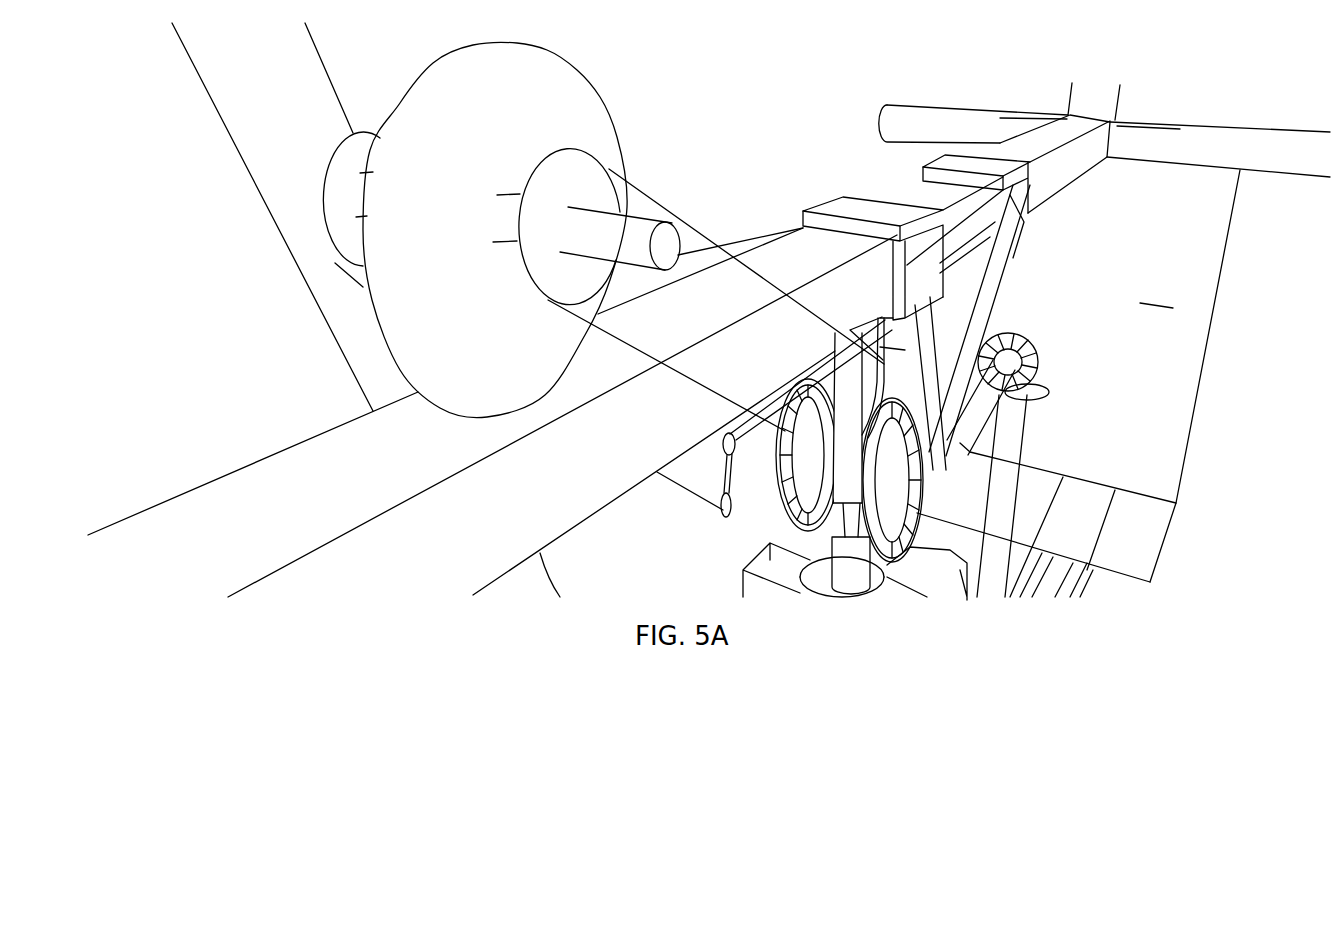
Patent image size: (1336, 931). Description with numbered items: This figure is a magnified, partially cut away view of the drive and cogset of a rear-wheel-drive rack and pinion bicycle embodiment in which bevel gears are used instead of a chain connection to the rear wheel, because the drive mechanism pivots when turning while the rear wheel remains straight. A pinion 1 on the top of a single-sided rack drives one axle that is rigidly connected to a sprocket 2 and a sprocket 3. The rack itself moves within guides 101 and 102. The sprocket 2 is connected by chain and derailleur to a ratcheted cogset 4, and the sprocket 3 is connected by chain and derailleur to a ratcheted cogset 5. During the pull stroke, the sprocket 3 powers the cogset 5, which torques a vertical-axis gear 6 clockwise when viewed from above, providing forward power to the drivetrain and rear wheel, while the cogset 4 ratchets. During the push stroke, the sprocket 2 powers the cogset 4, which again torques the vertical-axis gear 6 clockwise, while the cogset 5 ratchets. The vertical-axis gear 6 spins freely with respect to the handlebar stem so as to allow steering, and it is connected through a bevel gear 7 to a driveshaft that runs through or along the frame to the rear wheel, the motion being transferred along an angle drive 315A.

The pinion 1 is at (465, 149).
The sprocket 2 is at (590, 193).
The sprocket 3 is at (330, 183).
The ratcheted cogset 4 is at (893, 400).
The ratcheted cogset 5 is at (777, 481).
The vertical-axis gear 6 is at (807, 522).
The bevel gear 7 is at (888, 510).
The guide 101 is at (823, 201).
The guide 102 is at (921, 165).
The angle drive 315A is at (1068, 373).